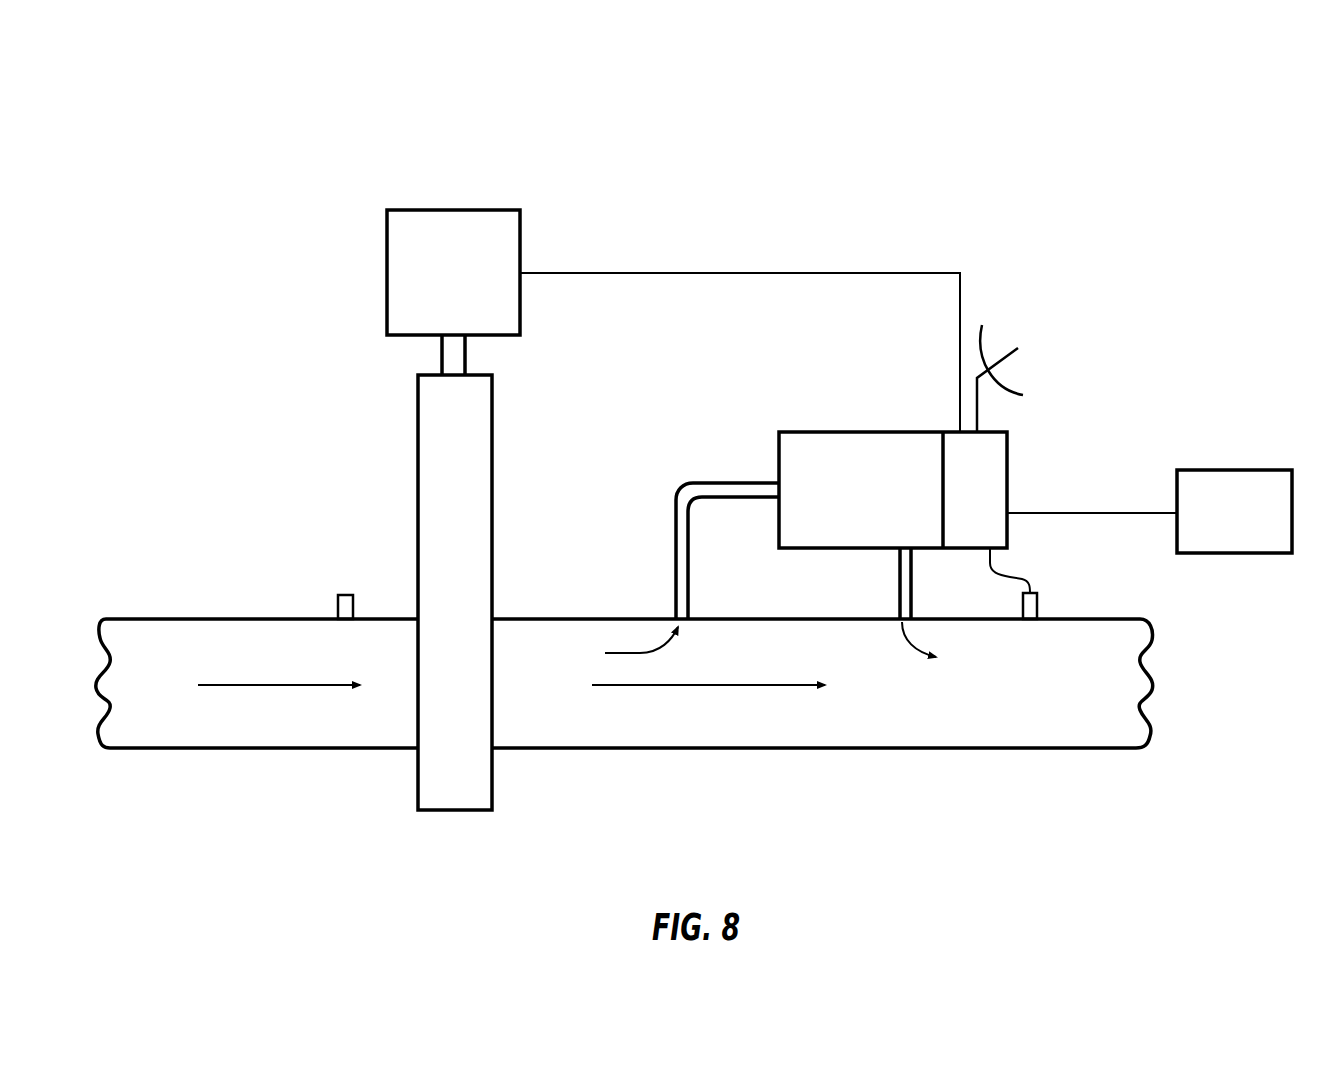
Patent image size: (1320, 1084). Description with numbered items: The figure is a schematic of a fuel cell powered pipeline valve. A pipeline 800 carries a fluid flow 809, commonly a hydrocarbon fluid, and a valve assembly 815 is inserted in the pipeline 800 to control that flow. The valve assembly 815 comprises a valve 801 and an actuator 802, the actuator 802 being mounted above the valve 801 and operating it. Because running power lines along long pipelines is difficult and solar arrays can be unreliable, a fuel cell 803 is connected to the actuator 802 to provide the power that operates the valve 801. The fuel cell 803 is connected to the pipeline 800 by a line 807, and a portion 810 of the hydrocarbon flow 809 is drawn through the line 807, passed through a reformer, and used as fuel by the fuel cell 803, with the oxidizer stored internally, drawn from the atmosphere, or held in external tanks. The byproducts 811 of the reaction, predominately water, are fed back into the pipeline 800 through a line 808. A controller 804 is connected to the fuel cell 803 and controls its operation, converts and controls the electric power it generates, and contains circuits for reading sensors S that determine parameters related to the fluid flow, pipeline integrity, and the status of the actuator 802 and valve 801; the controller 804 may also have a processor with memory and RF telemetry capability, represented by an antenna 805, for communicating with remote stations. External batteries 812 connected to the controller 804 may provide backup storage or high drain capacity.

The pipeline 800 is at (208, 618).
The valve 801 is at (417, 445).
The actuator 802 is at (428, 210).
The fuel cell 803 is at (847, 431).
The controller 804 is at (1008, 452).
The antenna 805 is at (1010, 368).
The line 807 is at (718, 483).
The line 808 is at (899, 575).
The fluid flow 809 is at (227, 687).
The portion of hydrocarbon flow 810 is at (622, 653).
The byproducts 811 is at (928, 646).
The external batteries 812 is at (1234, 511).
The valve assembly 815 is at (310, 372).
The sensors S is at (338, 603).